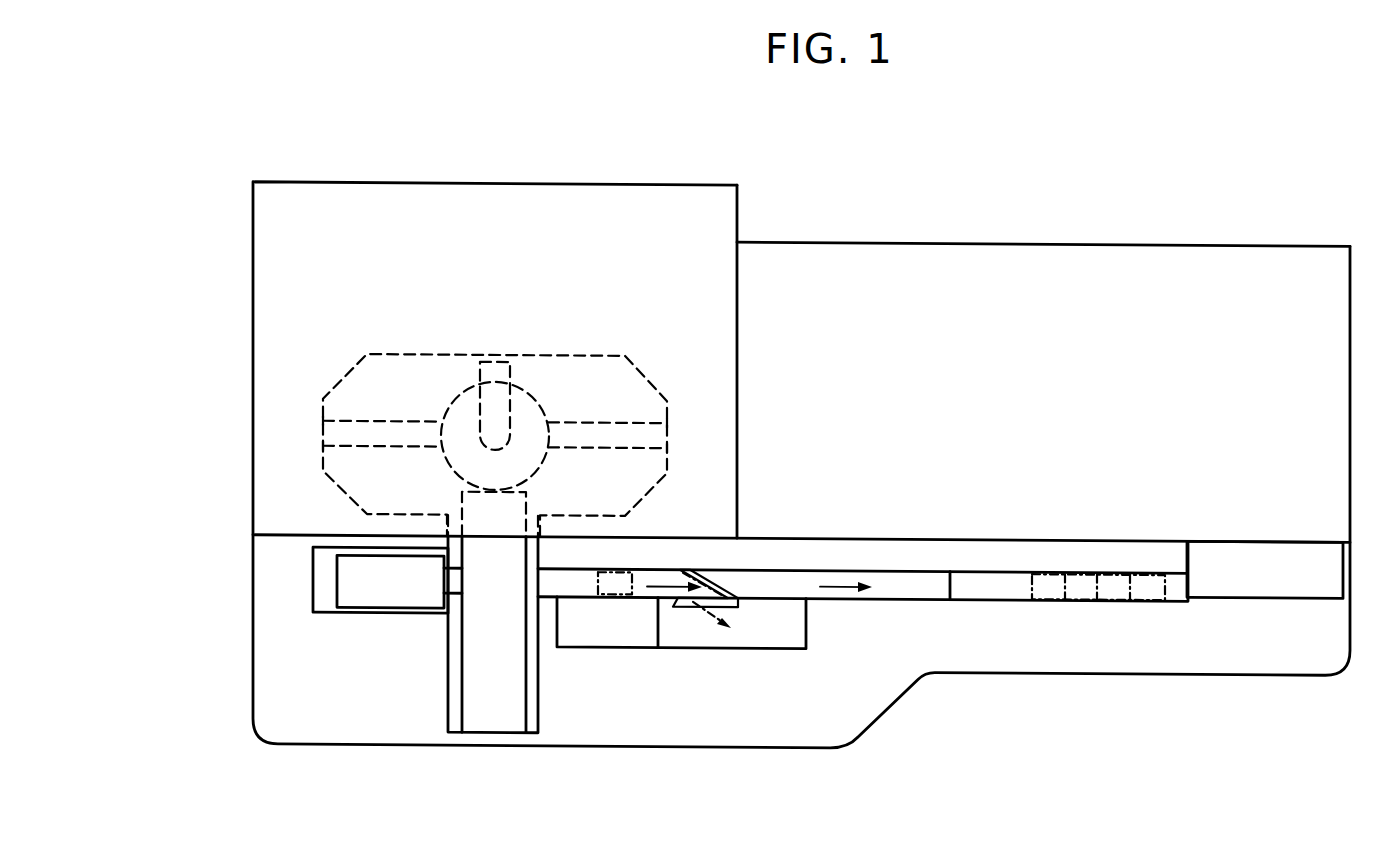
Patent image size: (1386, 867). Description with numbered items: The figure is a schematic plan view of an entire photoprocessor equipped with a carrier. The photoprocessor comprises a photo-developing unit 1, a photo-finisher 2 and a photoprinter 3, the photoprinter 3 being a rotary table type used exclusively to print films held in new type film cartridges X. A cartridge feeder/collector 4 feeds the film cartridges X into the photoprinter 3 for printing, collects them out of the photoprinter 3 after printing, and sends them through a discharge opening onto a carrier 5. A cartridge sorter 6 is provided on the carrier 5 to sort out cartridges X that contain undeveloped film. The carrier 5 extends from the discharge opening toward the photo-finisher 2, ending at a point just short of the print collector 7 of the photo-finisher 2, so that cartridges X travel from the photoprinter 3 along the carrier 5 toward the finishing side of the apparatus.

The photo-developing unit 1 is at (680, 202).
The photo-finisher 2 is at (1033, 265).
The photoprinter 3 is at (445, 351).
The cartridge feeder/collector 4 is at (484, 660).
The carrier 5 is at (930, 584).
The cartridge sorter 6 is at (686, 608).
The print collector 7 is at (1282, 569).
The film cartridges X is at (605, 592).